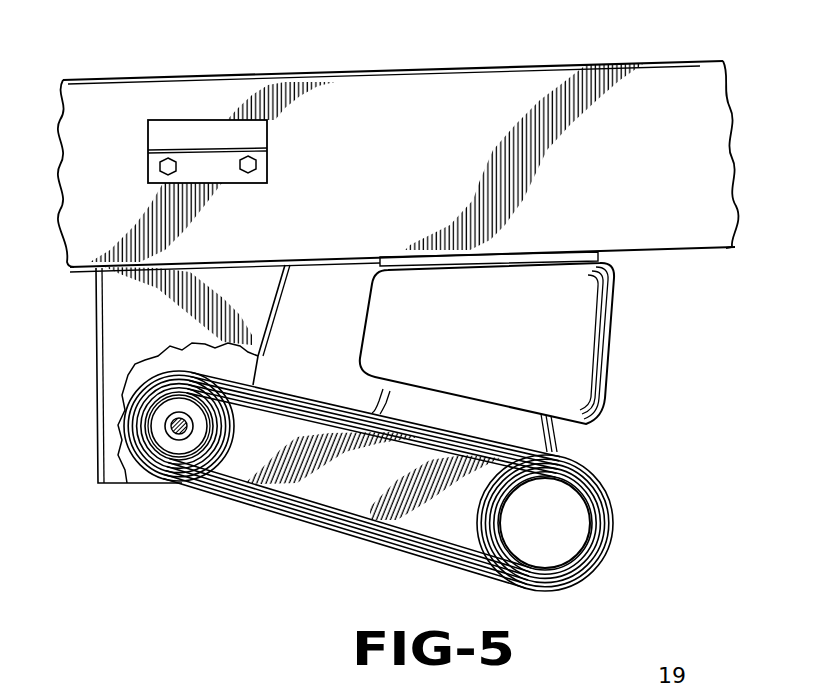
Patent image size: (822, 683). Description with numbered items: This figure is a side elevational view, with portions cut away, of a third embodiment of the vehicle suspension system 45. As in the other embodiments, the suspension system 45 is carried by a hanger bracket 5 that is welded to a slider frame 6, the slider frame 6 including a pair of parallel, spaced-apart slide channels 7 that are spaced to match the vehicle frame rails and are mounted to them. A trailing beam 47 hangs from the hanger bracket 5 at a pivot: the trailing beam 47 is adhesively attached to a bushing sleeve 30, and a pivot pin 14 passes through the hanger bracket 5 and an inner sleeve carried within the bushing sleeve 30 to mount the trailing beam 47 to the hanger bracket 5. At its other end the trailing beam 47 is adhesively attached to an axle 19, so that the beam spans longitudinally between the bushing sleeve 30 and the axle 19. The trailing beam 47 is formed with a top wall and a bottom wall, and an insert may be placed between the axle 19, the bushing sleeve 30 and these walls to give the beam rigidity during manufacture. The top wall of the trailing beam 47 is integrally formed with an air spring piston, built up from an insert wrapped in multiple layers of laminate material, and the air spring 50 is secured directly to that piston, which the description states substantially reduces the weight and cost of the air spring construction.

The hanger bracket 5 is at (255, 303).
The slider frame 6 is at (602, 55).
The slide channel 7 is at (668, 67).
The pivot pin 14 is at (172, 420).
The axle 19 is at (556, 510).
The bushing sleeve 30 is at (151, 422).
The suspension system 45 is at (612, 437).
The trailing beam 47 is at (320, 530).
The air spring 50 is at (582, 322).